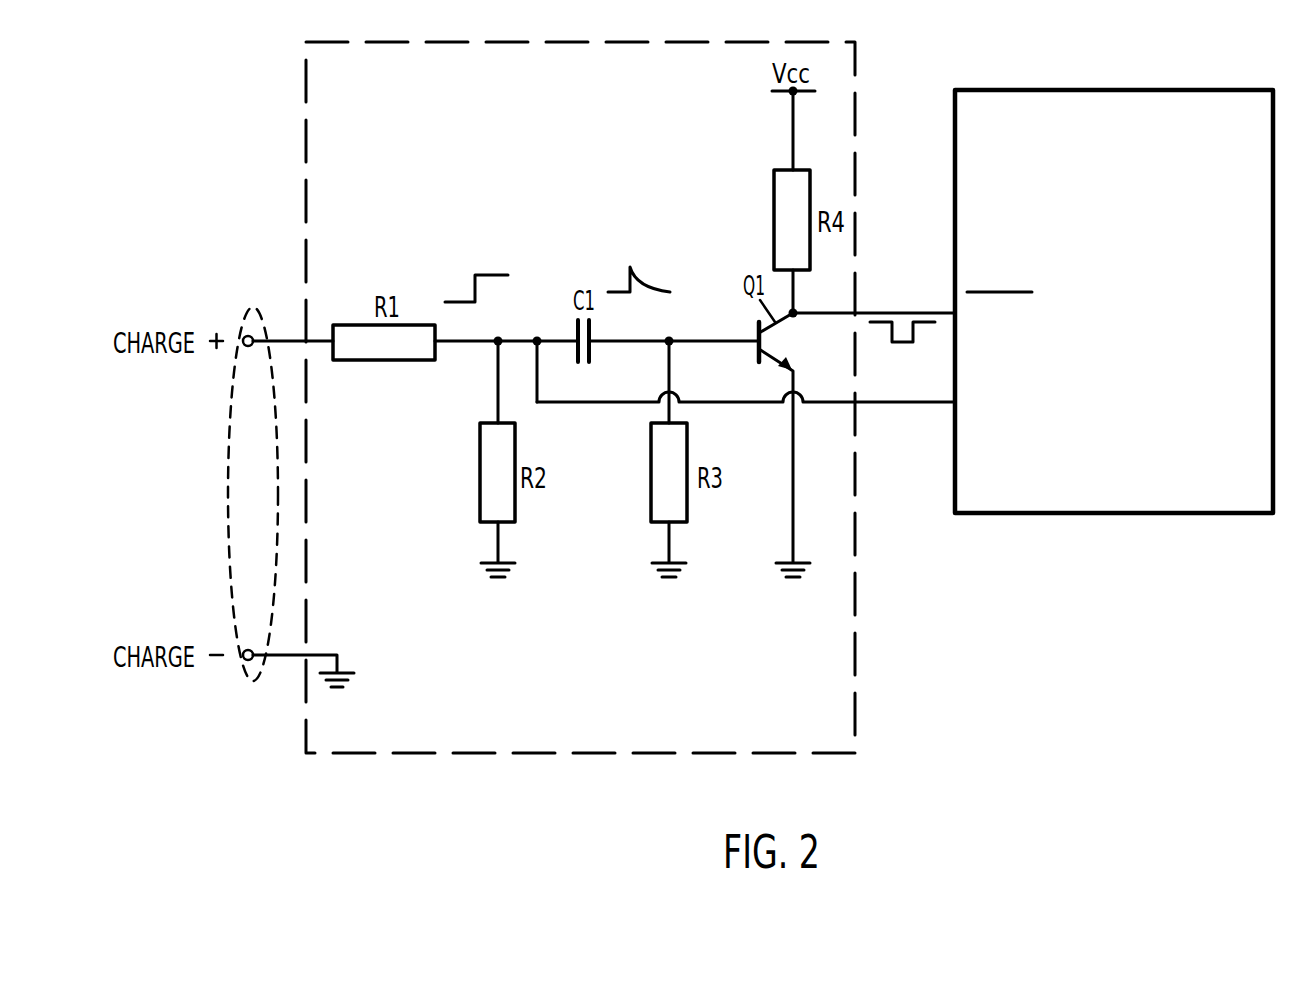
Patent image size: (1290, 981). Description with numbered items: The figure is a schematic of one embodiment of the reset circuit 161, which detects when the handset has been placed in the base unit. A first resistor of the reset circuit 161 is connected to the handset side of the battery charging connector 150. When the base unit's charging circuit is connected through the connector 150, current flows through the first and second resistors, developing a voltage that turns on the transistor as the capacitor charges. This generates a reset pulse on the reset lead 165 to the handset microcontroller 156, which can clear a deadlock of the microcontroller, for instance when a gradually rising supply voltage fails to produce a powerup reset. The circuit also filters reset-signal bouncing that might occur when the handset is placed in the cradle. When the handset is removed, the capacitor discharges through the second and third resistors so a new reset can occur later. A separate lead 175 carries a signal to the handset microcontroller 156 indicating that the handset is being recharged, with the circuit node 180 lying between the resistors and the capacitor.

The connector 150 is at (257, 307).
The handset microcontroller 156 is at (1075, 511).
The reset circuit 161 is at (857, 722).
The reset lead 165 is at (870, 306).
The lead 175 is at (902, 403).
The circuit node 180 is at (537, 335).